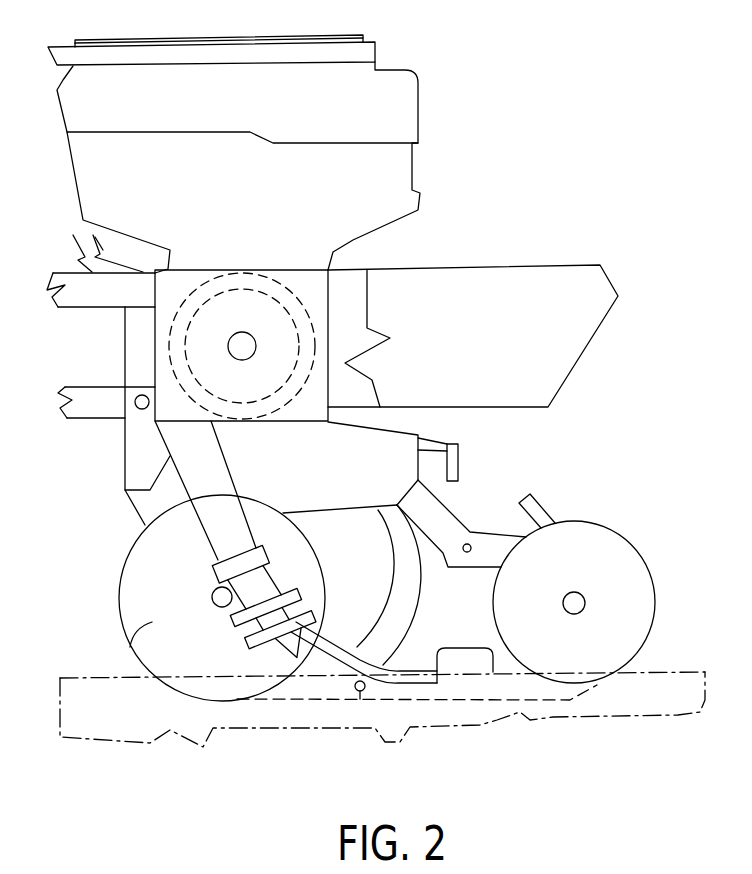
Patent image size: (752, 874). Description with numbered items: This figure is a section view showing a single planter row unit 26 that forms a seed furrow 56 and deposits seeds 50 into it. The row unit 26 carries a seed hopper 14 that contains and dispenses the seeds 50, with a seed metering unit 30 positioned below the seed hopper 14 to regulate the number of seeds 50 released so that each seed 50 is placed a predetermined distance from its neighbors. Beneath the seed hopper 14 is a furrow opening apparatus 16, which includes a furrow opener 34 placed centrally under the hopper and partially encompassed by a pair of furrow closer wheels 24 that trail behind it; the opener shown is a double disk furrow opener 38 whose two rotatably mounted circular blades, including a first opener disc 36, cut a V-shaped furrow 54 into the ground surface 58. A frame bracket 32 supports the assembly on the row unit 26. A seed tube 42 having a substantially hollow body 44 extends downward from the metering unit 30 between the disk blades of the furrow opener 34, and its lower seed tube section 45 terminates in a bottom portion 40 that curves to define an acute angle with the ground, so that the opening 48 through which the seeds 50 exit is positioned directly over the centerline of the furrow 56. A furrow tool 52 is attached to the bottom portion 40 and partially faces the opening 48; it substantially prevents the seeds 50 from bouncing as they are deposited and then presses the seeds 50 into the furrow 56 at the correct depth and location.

The seed hopper 14 is at (378, 181).
The furrow opening apparatus 16 is at (99, 505).
The furrow closer wheels 24 is at (582, 542).
The planter row unit 26 is at (431, 52).
The seed metering unit 30 is at (265, 320).
The frame bracket 32 is at (185, 436).
The furrow opener 34 is at (119, 613).
The first opener disc 36 is at (130, 551).
The double disk furrow opener 38 is at (130, 646).
The bottom portion 40 is at (278, 662).
The seed tube 42 is at (217, 479).
The hollow body 44 is at (230, 520).
The lower seed tube section 45 is at (255, 625).
The opening 48 is at (298, 655).
The seeds 50 is at (359, 701).
The furrow tool 52 is at (386, 663).
The furrow 54 is at (463, 698).
The seed furrow 56 is at (530, 687).
The ground surface 58 is at (645, 697).